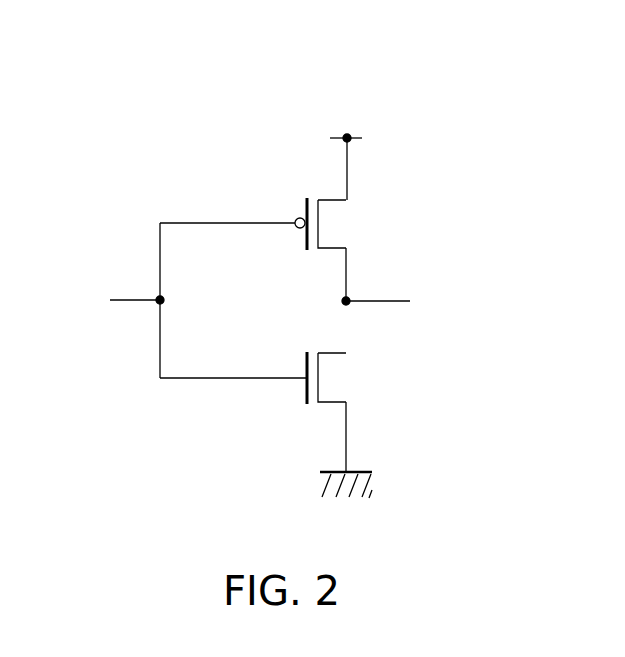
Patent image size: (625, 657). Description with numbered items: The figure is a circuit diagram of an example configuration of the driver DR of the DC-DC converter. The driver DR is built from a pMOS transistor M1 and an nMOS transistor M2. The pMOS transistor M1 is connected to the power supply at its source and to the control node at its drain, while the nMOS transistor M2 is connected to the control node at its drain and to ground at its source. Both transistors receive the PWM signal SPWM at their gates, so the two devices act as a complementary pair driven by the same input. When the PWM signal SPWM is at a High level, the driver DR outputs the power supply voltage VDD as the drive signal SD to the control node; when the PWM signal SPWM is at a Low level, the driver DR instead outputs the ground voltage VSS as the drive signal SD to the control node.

The driver DR is at (413, 88).
The pMOS transistor M1 is at (329, 199).
The nMOS transistor M2 is at (330, 353).
The power supply voltage VDD is at (346, 121).
The ground voltage VSS is at (346, 500).
The PWM signal SPWM is at (99, 302).
The drive signal SD is at (394, 304).